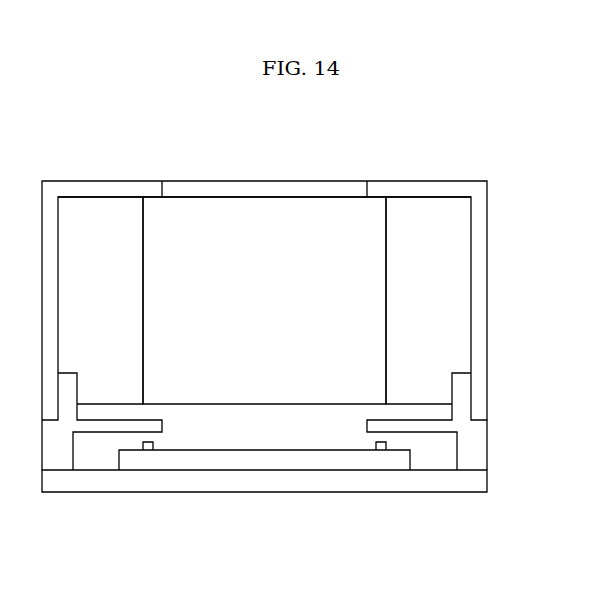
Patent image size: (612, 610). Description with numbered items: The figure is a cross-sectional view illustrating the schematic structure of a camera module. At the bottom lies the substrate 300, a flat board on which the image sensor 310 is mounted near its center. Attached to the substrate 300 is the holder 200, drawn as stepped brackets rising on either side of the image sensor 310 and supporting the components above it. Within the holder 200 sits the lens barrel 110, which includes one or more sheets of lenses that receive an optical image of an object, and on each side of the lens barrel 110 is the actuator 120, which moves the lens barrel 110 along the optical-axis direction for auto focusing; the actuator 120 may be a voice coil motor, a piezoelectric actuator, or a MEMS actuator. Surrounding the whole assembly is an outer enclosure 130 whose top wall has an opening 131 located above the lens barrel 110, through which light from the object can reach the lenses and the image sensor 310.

The lens barrel 110 is at (366, 343).
The actuator 120 is at (455, 290).
The housing 130 is at (473, 247).
The opening / window of housing 131 is at (367, 190).
The holder 200 is at (483, 447).
The substrate 300 is at (430, 483).
The image sensor 310 is at (348, 467).